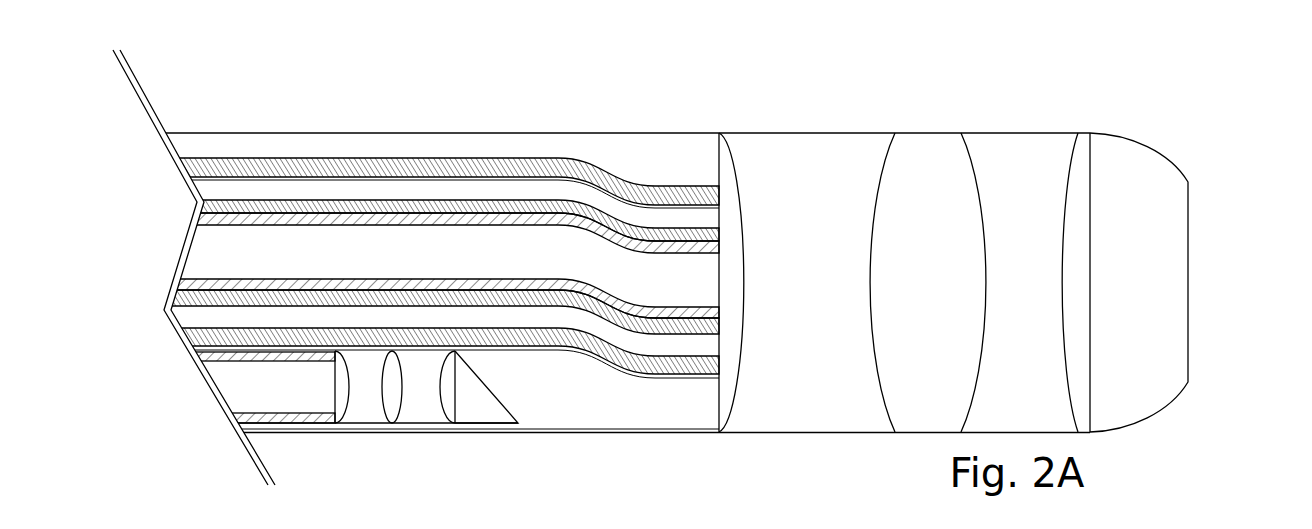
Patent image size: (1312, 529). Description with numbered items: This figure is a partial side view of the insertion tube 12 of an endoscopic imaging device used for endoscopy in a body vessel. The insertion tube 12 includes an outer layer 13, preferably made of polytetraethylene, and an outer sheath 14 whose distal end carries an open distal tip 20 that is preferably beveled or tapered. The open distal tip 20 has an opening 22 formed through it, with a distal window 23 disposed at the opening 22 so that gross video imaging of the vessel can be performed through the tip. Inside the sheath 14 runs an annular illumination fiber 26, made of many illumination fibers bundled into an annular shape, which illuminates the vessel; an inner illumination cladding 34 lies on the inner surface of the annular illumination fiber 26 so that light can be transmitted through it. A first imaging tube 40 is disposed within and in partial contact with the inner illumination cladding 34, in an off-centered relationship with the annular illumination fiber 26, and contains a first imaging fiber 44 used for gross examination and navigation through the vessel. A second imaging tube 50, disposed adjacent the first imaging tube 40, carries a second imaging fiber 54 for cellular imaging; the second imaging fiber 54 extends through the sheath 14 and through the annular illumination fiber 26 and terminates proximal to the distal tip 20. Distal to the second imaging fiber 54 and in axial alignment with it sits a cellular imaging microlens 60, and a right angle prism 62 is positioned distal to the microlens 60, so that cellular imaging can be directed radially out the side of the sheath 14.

The insertion tube 12 is at (951, 93).
The outer layer 13 is at (247, 133).
The outer sheath 14 is at (675, 192).
The open distal tip 20 is at (1188, 180).
The opening 22 is at (1188, 295).
The distal window 23 is at (1188, 220).
The annular illumination fiber 26 is at (348, 190).
The inner illumination cladding 34 is at (508, 202).
The first imaging tube 40 is at (622, 237).
The first imaging fiber 44 is at (371, 259).
The second imaging tube 50 is at (227, 353).
The second imaging fiber 54 is at (286, 394).
The cellular imaging microlens 60 is at (366, 388).
The right angle prism 62 is at (468, 402).